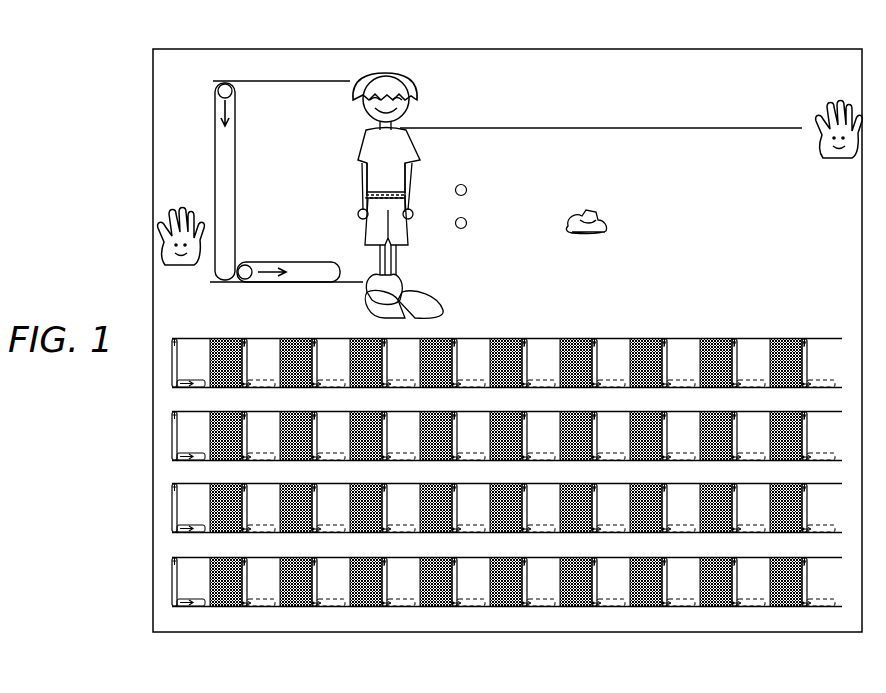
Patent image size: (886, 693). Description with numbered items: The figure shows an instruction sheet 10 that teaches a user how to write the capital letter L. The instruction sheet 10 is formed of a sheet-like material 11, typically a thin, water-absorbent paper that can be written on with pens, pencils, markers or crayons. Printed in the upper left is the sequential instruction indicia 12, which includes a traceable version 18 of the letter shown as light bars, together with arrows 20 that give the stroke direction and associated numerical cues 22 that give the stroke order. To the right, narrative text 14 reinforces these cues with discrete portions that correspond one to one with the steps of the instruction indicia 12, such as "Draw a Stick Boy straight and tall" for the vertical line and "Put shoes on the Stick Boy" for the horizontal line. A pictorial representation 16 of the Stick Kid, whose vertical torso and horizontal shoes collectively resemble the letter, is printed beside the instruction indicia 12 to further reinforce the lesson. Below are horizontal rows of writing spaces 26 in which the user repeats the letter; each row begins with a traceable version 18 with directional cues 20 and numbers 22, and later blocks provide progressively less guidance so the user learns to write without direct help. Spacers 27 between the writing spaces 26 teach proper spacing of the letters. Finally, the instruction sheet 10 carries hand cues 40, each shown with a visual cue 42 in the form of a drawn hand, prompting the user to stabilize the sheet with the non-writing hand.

The instruction sheet 10 is at (487, 618).
The sheet-like material 11 is at (548, 617).
The sequential instruction indicia 12 is at (277, 79).
The narrative text 14 is at (660, 178).
The pictorial representation 16 is at (419, 77).
The traceable version 18 is at (225, 193).
The arrows 20 is at (228, 105).
The numerical cues 22 is at (216, 96).
The writing spaces 26 is at (193, 355).
The spacers 27 is at (440, 340).
The hand cue 40 is at (181, 198).
The visual cue 42 is at (175, 284).